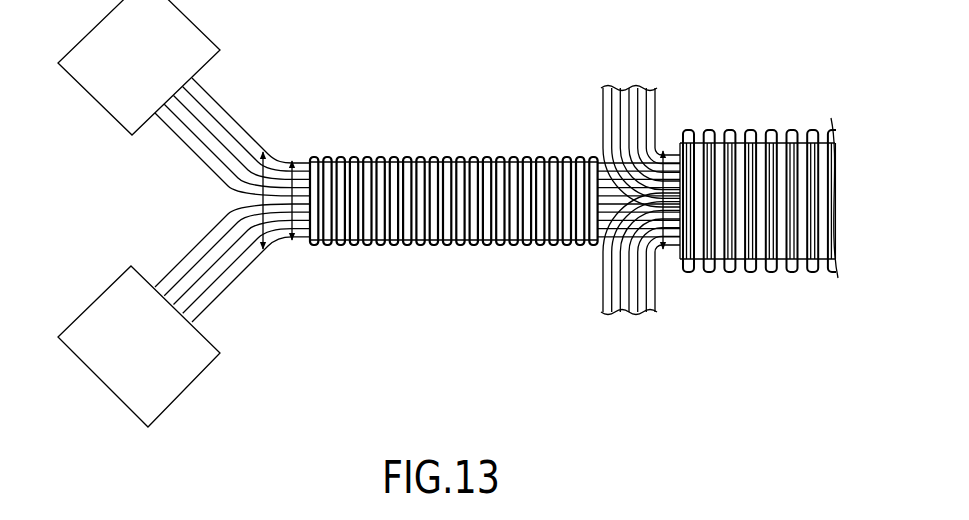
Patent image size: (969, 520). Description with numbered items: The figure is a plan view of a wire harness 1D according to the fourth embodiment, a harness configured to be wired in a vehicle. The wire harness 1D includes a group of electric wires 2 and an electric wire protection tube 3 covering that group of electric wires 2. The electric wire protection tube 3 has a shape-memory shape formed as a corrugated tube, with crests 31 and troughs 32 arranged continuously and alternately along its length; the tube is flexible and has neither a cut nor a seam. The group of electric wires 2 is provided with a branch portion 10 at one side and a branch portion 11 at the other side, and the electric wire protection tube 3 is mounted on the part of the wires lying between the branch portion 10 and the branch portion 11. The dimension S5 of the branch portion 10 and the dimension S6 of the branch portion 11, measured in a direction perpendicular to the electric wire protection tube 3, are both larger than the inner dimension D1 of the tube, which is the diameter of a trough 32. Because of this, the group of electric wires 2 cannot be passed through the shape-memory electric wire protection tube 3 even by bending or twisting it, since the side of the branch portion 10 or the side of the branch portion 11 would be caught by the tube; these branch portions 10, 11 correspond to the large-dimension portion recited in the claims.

The wire harness 1D is at (448, 213).
The branch portion 10 is at (277, 156).
The electric wire protection tube 3 is at (454, 199).
The crests 31 is at (341, 155).
The troughs 32 is at (345, 249).
The group of electric wires 2 is at (292, 243).
The branch portion 11 is at (671, 255).
The inner dimension D1 is at (265, 253).
The dimension of branch portion S5 is at (261, 209).
The dimension of branch portion S6 is at (678, 205).